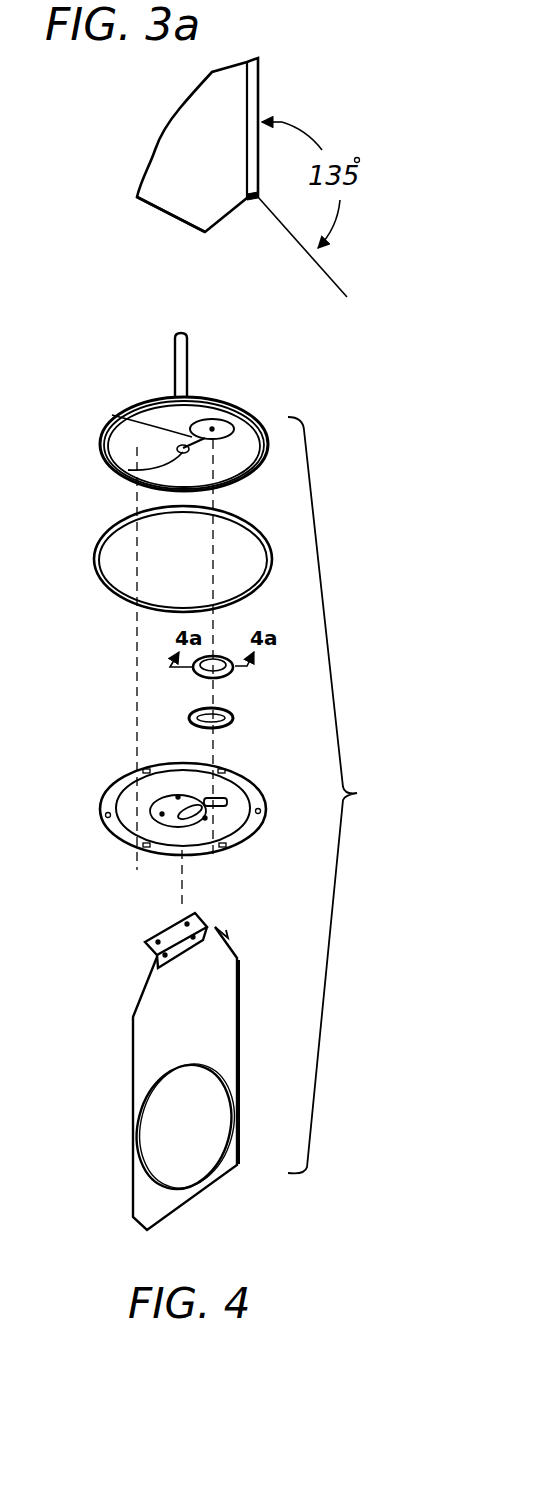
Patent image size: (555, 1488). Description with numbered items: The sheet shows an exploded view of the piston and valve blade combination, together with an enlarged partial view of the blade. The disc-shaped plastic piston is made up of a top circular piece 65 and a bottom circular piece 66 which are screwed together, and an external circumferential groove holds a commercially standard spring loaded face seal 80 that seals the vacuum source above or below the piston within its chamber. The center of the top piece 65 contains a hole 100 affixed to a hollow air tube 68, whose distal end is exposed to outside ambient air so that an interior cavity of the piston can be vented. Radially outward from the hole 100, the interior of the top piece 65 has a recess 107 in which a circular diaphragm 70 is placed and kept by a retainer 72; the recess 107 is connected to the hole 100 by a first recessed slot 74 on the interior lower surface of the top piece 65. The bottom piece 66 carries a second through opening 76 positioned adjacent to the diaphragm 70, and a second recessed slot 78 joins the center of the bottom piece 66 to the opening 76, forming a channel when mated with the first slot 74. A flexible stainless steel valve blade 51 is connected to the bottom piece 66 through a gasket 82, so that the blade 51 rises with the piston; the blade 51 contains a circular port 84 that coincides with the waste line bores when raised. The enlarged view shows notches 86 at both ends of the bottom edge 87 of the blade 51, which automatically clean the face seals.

In FIG. 3A, the valve blade 51 is at (259, 78).
In FIG. 4, the valve blade 51 is at (133, 1042).
In FIG. 3A, the bottom edge 87 is at (148, 205).
In FIG. 3A, the notches 86 is at (255, 200).
In FIG. 4, the hollow air tube 68 is at (175, 350).
In FIG. 4, the top circular piece 65 is at (210, 397).
In FIG. 4, the first recessed slot 74 is at (120, 423).
In FIG. 4, the recess 107 is at (242, 422).
In FIG. 4, the hole 100 is at (105, 473).
In FIG. 4, the spring loaded face seal 80 is at (95, 556).
In FIG. 4, the circular diaphragm 70 is at (228, 680).
In FIG. 4, the retainer 72 is at (232, 722).
In FIG. 4, the bottom circular piece 66 is at (262, 795).
In FIG. 4, the second through opening 76 is at (215, 806).
In FIG. 4, the second recessed slot 78 is at (198, 818).
In FIG. 4, the gasket 82 is at (208, 922).
In FIG. 4, the circular port 84 is at (155, 1115).